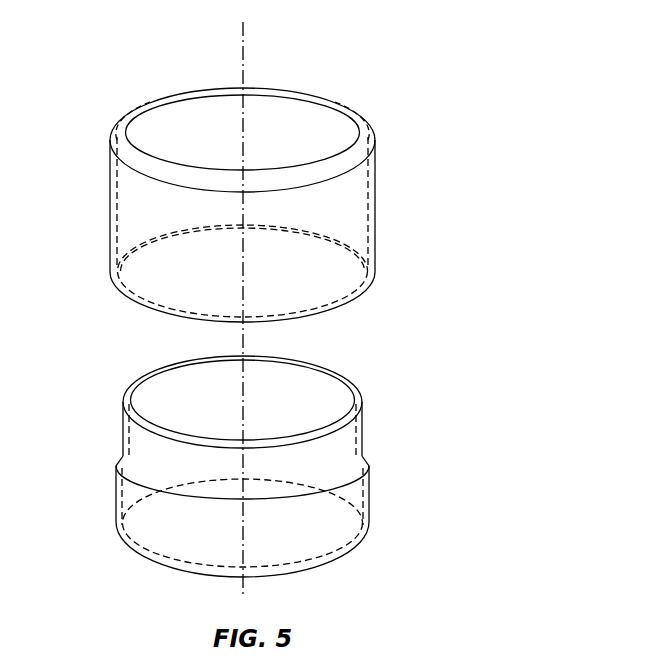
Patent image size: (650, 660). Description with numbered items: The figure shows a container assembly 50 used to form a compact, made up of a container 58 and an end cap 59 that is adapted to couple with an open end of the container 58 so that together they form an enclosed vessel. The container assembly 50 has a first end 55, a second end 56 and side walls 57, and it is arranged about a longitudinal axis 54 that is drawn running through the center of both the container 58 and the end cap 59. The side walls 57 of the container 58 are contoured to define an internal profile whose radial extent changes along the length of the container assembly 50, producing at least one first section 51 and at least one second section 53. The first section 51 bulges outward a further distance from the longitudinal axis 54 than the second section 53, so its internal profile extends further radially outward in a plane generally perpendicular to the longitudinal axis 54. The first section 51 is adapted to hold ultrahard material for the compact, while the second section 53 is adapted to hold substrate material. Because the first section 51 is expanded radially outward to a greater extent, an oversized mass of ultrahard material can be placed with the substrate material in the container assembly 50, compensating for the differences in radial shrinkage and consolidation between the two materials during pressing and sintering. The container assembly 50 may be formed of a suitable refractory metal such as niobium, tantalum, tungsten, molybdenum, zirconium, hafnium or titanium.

The container assembly 50 is at (497, 114).
The first section 51 is at (393, 552).
The second section 53 is at (393, 450).
The longitudinal axis 54 is at (243, 47).
The first end 55 is at (276, 561).
The second end 56 is at (313, 107).
The side walls 57 is at (110, 243).
The container 58 is at (147, 518).
The end cap 59 is at (355, 220).